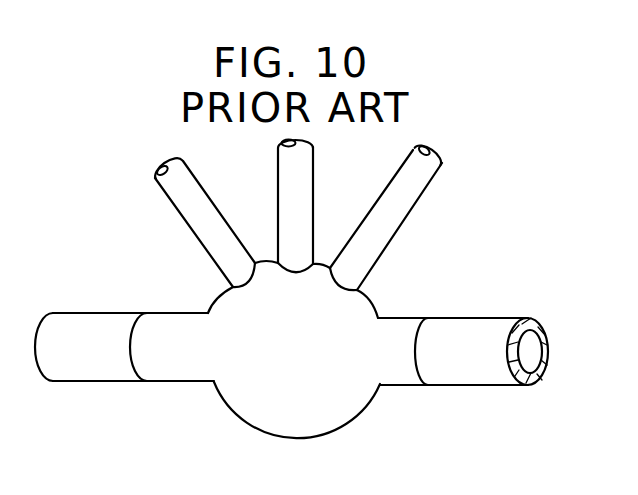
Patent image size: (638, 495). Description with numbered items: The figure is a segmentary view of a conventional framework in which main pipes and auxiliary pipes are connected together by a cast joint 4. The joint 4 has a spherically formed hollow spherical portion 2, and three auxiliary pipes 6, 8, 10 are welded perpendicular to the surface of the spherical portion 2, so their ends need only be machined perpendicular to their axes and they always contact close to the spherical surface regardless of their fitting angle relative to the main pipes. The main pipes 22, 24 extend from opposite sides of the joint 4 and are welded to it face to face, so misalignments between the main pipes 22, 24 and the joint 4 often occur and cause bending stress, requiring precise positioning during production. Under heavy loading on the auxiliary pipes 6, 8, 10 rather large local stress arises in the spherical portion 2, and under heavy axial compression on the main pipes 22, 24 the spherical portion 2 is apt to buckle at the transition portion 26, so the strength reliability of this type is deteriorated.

The spherical portion 2 is at (326, 263).
The joint 4 is at (297, 395).
The auxiliary pipe 6 is at (188, 213).
The auxiliary pipe 8 is at (277, 168).
The auxiliary pipe 10 is at (410, 202).
The main pipe 22 is at (75, 323).
The main pipe 24 is at (475, 330).
The transition portion 26 is at (210, 313).